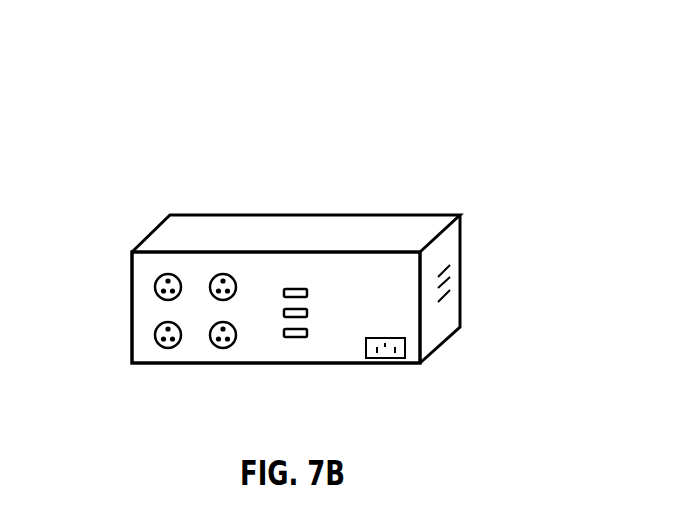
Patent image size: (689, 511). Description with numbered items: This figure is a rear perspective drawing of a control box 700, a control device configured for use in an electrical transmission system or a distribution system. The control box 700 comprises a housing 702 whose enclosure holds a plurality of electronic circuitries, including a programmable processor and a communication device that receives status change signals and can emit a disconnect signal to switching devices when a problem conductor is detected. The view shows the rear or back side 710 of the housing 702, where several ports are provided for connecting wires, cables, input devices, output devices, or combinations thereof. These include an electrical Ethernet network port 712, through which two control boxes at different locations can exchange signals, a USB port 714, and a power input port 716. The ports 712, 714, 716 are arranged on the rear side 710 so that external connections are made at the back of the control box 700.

The control box 700 is at (310, 269).
The housing 702 is at (178, 233).
The rear or back side 710 is at (362, 280).
The electrical Ethernet network port 712 is at (165, 343).
The USB port 714 is at (283, 290).
The power input port 716 is at (398, 360).